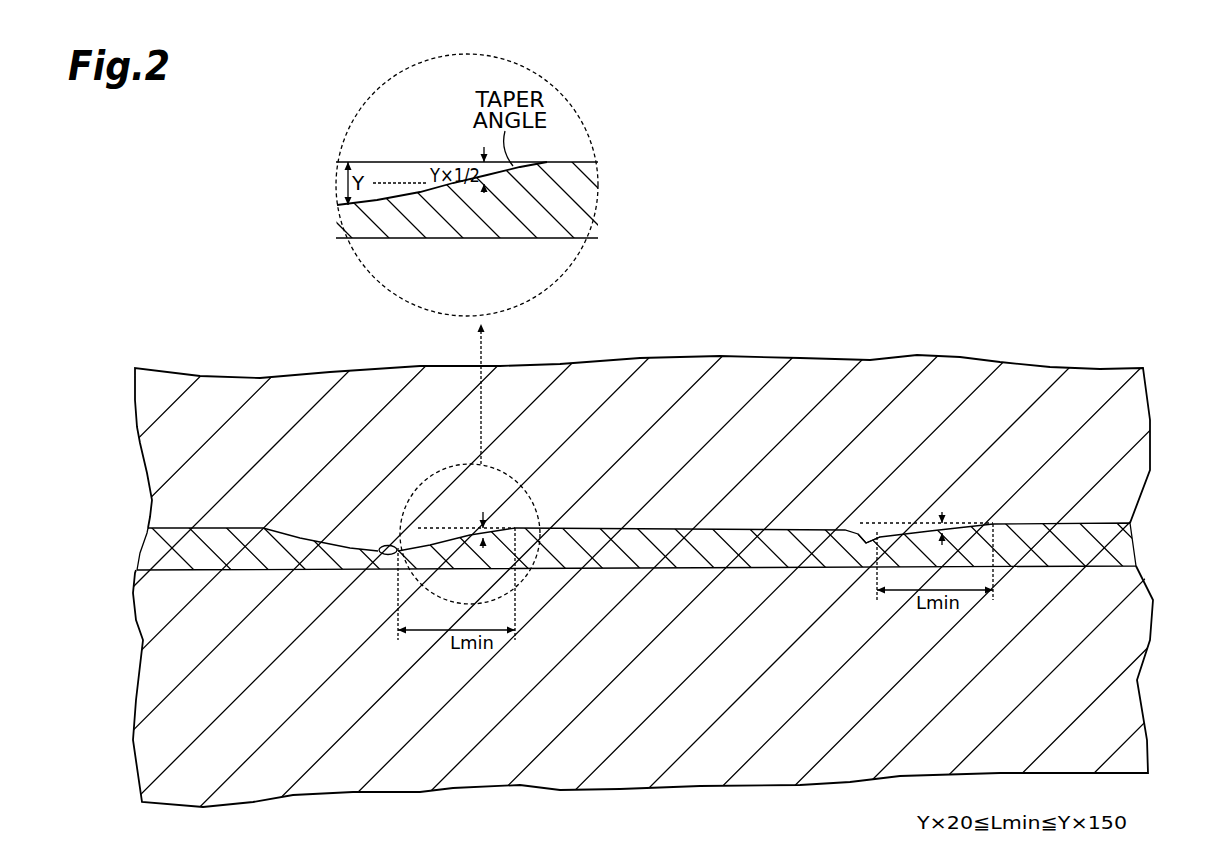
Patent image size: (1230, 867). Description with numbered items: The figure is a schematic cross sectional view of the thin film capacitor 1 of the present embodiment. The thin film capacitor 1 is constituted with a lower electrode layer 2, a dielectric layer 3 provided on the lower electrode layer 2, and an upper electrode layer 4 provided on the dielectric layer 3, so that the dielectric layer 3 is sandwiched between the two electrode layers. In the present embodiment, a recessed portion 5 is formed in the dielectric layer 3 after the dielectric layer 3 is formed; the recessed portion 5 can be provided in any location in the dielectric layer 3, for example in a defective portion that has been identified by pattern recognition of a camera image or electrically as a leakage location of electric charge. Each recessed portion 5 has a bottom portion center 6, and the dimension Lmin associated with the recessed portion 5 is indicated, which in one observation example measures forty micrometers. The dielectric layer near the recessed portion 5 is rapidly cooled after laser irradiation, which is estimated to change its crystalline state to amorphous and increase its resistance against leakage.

The thin film capacitor 1 is at (615, 524).
The lower electrode layer 2 is at (1143, 668).
The dielectric layer 3 is at (153, 552).
The upper electrode layer 4 is at (1152, 453).
The recessed portion 5 is at (452, 543).
The bottom portion center 6 is at (390, 546).